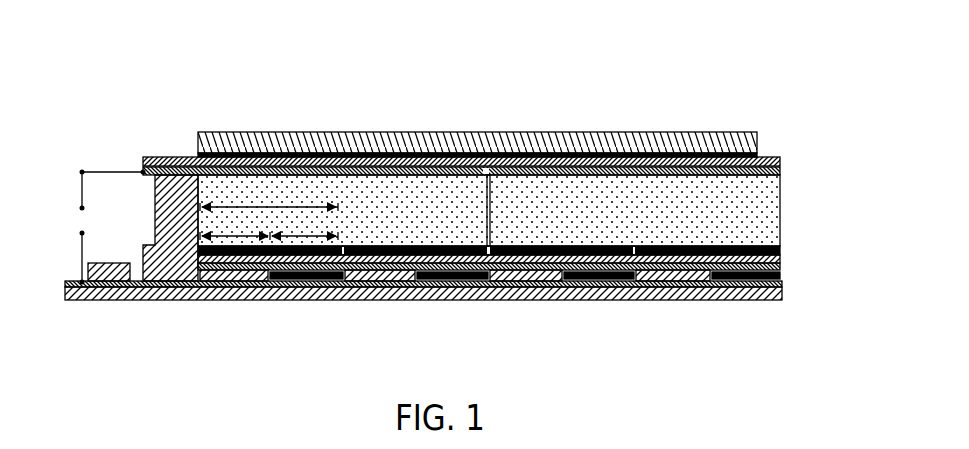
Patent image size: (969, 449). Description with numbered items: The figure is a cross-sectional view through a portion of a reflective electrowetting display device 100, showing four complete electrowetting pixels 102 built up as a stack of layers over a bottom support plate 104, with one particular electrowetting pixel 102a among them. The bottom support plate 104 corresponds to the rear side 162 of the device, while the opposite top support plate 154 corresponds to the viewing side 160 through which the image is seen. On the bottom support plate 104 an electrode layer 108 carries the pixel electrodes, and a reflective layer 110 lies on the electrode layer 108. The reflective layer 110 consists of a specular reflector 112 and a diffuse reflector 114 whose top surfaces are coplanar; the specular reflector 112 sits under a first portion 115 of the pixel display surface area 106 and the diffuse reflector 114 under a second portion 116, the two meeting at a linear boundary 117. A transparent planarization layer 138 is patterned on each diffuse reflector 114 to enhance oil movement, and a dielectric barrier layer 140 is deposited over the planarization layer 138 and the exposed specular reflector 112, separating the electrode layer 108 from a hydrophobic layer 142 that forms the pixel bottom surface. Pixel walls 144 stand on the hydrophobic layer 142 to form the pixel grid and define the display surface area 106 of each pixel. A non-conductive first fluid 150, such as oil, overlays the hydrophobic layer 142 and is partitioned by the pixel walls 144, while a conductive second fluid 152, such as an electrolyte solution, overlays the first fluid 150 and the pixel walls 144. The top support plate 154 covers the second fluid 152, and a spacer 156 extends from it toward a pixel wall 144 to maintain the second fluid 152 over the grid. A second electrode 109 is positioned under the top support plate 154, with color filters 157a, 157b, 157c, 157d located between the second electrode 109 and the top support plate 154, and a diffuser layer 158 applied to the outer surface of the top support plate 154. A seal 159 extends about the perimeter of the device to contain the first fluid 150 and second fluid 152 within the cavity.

The reflective electrowetting display device 100 is at (709, 60).
The electrowetting pixel 102 is at (417, 340).
The electrowetting pixel 102a is at (276, 340).
The bottom support plate 104 is at (85, 296).
The display surface area 106 is at (250, 207).
The electrode layer 108 is at (140, 296).
The second electrode 109 is at (779, 172).
The reflective layer 110 is at (791, 279).
The specular reflector 112 is at (218, 283).
The diffuse reflector 114 is at (316, 283).
The first portion 115 is at (220, 236).
The second portion 116 is at (298, 236).
The boundary 117 is at (271, 280).
The planarization layer 138 is at (582, 247).
The dielectric barrier layer 140 is at (779, 267).
The hydrophobic layer 142 is at (779, 258).
The pixel wall 144 is at (343, 247).
The first fluid 150 is at (197, 250).
The second fluid 152 is at (459, 211).
The top support plate 154 is at (162, 157).
The spacer 156 is at (493, 186).
The color filter 157a is at (298, 141).
The color filter 157b is at (401, 141).
The color filter 157c is at (588, 141).
The color filter 157d is at (686, 141).
The diffuser layer 158 is at (246, 132).
The seal 159 is at (160, 192).
The viewing side 160 is at (394, 80).
The rear side 162 is at (191, 346).